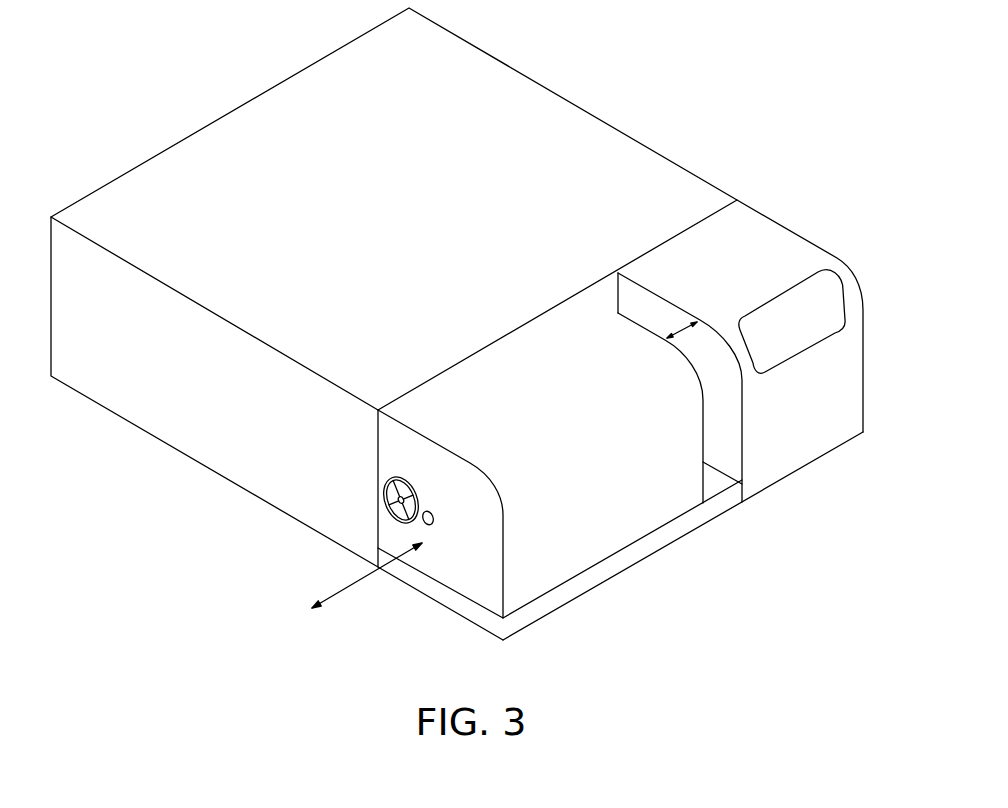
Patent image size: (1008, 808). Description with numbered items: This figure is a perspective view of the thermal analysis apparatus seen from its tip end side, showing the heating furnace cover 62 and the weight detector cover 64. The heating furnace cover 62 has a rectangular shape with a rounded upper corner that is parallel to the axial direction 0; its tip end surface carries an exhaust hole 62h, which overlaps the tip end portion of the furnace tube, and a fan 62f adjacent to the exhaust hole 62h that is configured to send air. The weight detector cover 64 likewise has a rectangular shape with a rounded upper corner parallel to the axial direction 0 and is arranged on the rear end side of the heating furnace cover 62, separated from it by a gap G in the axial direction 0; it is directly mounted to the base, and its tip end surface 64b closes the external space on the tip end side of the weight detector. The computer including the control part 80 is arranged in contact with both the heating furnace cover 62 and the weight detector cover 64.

The control part 80 is at (586, 133).
The heating furnace cover 62 is at (623, 537).
The fan 62f is at (391, 503).
The exhaust hole 62h is at (432, 527).
The weight detector cover 64 is at (812, 449).
The tip end surface 64b is at (660, 317).
The gap G is at (687, 329).
The axial direction 0 is at (349, 589).